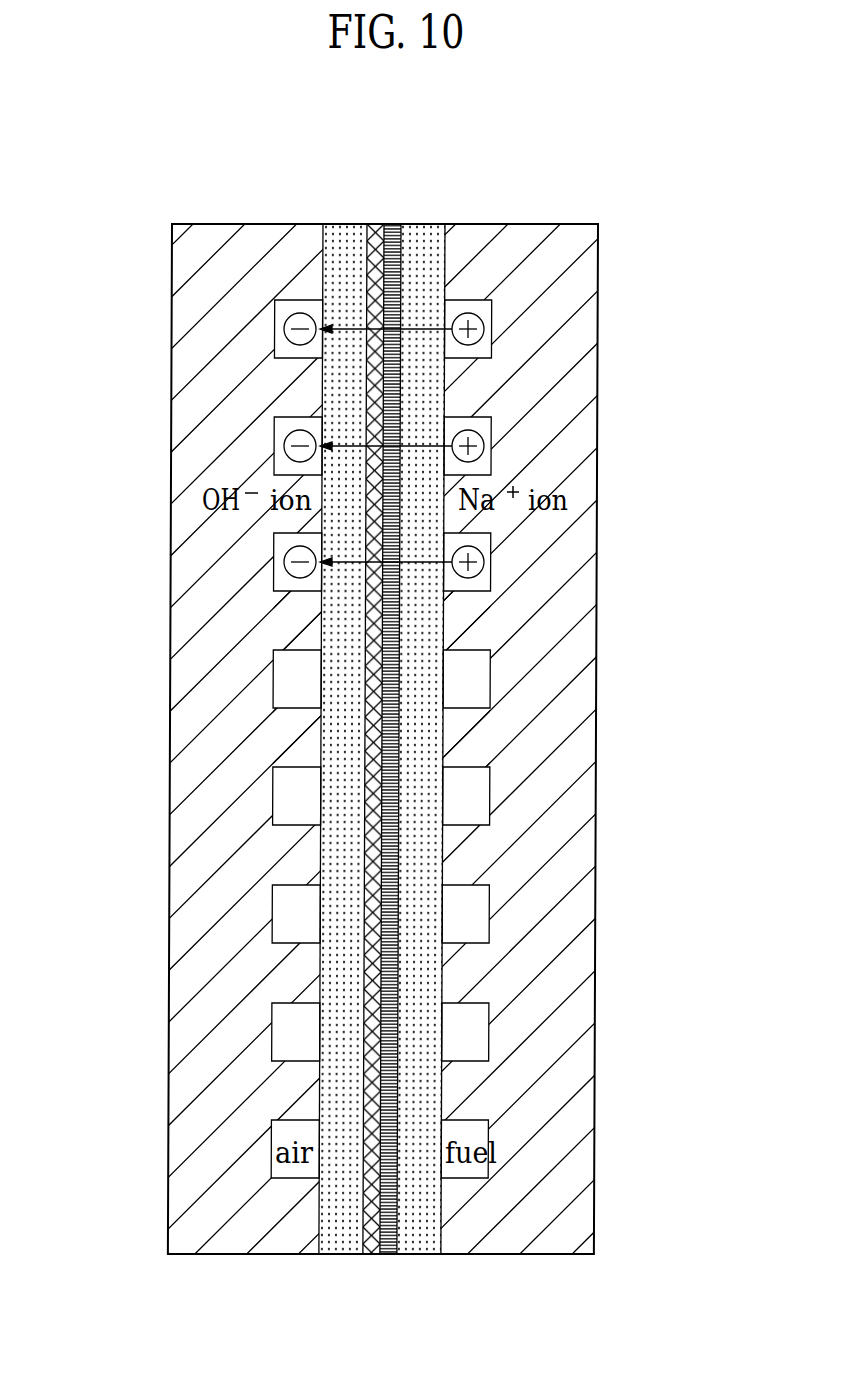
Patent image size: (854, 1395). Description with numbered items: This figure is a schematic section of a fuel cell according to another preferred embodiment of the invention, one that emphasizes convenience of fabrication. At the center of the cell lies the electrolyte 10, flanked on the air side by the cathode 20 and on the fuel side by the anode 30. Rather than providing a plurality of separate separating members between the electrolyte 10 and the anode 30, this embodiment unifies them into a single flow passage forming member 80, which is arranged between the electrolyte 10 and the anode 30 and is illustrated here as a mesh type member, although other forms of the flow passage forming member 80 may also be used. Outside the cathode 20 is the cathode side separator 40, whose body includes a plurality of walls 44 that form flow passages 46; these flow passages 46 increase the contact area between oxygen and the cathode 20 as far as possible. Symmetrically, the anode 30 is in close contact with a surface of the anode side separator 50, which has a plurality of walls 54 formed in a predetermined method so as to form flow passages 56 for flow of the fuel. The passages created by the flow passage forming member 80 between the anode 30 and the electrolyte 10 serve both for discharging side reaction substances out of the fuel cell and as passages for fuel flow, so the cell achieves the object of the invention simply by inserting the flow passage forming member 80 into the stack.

The electrolyte 10 is at (374, 1252).
The cathode 20 is at (342, 1247).
The anode 30 is at (430, 1250).
The flow passage forming member 80 is at (391, 1253).
The cathode side separator 40 is at (175, 1075).
The walls 44 is at (288, 747).
The flow passages 46 is at (303, 797).
The anode side separator 50 is at (565, 986).
The walls 54 is at (478, 750).
The flow passages 56 is at (468, 925).